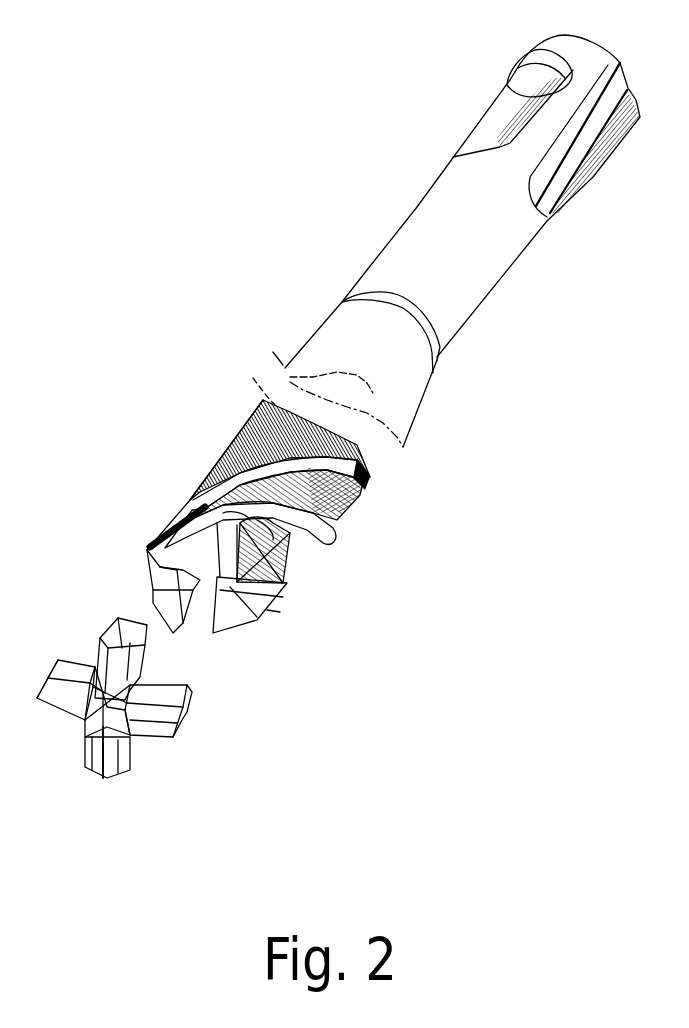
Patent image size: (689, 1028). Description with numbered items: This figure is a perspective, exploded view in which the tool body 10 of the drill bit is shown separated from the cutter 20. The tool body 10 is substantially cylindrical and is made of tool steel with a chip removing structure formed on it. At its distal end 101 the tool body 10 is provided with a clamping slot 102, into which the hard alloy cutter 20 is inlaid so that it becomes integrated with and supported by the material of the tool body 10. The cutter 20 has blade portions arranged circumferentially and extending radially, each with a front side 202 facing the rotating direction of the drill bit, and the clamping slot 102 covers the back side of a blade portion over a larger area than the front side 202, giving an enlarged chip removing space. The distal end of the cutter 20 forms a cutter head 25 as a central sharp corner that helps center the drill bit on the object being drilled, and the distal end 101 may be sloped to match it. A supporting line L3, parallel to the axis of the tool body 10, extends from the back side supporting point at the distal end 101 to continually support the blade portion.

The tool body 10 is at (410, 250).
The distal end of the tool body 101 is at (177, 530).
The clamping slot 102 is at (283, 580).
The supporting line L3 is at (267, 610).
The cutter 20 is at (208, 677).
The front side 202 is at (158, 690).
The cutter head 25 is at (130, 735).